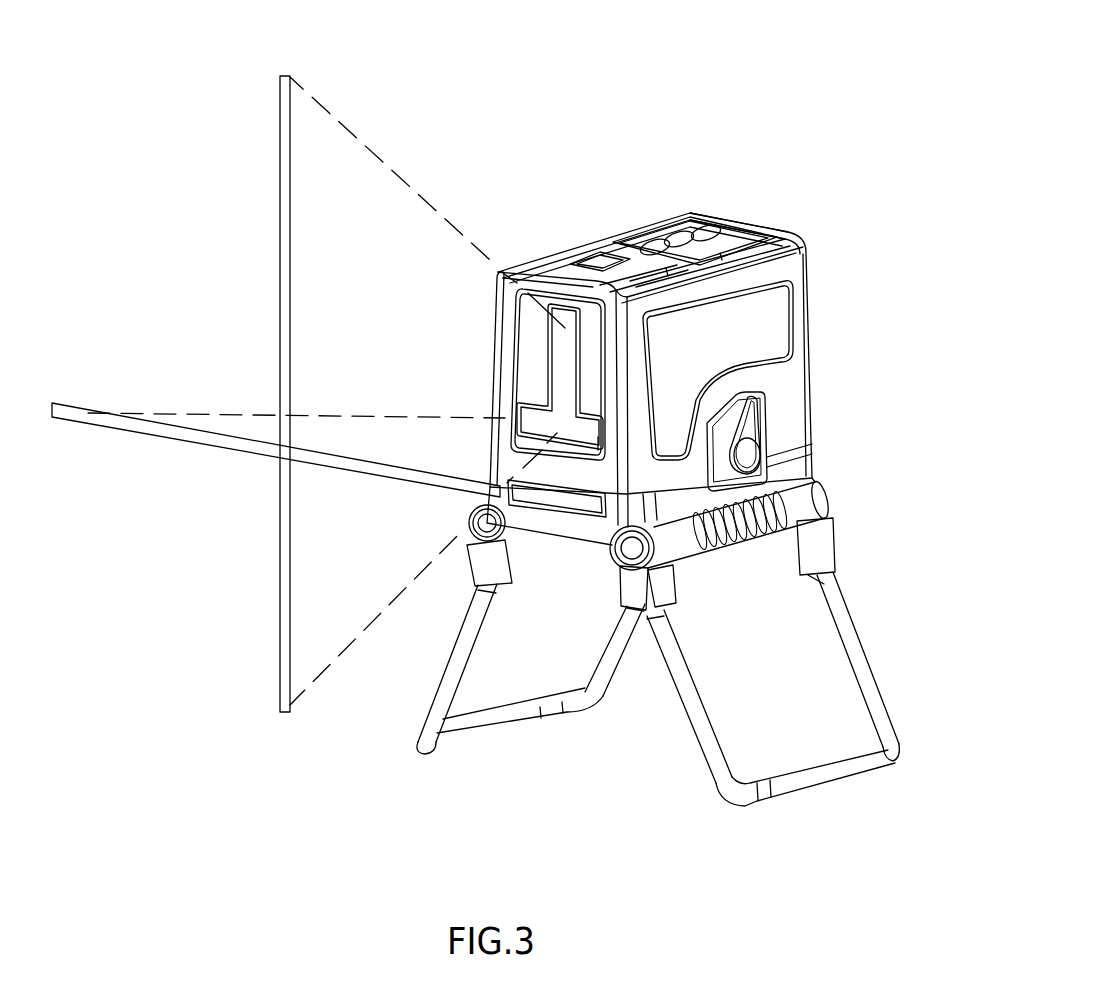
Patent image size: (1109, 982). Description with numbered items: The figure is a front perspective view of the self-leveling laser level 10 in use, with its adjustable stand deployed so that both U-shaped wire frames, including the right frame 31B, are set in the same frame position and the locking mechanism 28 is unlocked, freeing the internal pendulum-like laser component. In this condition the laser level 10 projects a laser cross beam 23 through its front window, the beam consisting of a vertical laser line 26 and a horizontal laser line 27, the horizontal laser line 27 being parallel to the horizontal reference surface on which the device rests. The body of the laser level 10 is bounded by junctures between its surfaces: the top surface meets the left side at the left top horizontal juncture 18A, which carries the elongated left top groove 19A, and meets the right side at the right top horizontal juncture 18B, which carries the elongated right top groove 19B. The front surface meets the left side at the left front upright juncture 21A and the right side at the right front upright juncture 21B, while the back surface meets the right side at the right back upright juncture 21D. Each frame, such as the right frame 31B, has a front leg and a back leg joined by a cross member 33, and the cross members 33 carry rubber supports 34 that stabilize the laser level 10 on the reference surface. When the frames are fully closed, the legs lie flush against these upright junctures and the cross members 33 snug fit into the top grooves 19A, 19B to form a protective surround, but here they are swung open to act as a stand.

The laser level 10 is at (800, 111).
The laser cross beam 23 is at (203, 189).
The vertical laser line 26 is at (270, 314).
The horizontal laser line 27 is at (207, 446).
The elongated left top groove 19A is at (498, 270).
The left top horizontal juncture 18A is at (510, 273).
The right top horizontal juncture 18B is at (637, 278).
The elongated right top groove 19B is at (786, 233).
The left front upright juncture 21A is at (492, 358).
The right back upright juncture 21D is at (810, 300).
The right front upright juncture 21B is at (625, 465).
The locking mechanism 28 is at (753, 453).
The right frame 31B is at (447, 668).
The cross member 33 is at (450, 728).
The rubber supports 34 is at (482, 730).